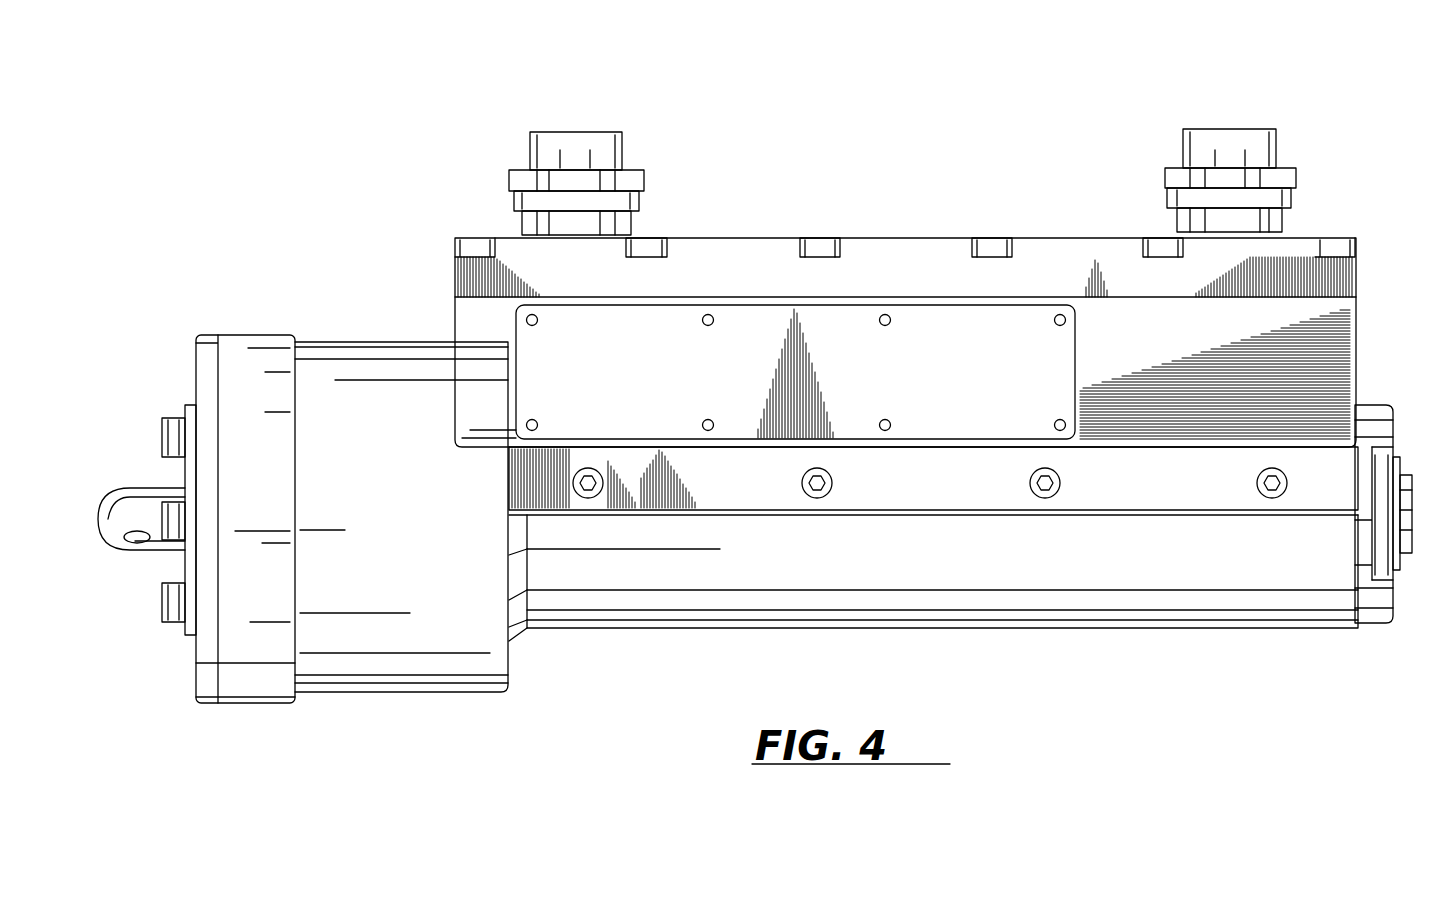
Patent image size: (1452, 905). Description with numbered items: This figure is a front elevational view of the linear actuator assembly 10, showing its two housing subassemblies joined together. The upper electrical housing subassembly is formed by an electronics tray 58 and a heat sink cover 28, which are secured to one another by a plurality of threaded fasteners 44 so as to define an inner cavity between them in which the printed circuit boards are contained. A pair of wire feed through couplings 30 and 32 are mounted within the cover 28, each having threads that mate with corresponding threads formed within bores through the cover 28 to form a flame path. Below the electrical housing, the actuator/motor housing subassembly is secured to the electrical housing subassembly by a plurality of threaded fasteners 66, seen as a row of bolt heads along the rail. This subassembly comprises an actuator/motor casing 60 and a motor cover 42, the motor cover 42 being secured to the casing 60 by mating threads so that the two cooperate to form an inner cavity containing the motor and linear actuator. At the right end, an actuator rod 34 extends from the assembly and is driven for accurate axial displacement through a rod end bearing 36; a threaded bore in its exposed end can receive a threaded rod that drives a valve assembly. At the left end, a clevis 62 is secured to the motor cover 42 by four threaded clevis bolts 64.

The linear actuator assembly 10 is at (1000, 90).
The heat sink cover 28 is at (940, 281).
The wire feed through coupling 30 is at (580, 132).
The wire feed through coupling 32 is at (1230, 128).
The actuator rod 34 is at (1412, 530).
The rod end bearing 36 is at (1396, 462).
The motor cover 42 is at (205, 333).
The threaded fasteners 44 is at (820, 238).
The electronics tray 58 is at (1148, 345).
The actuator/motor casing 60 is at (436, 535).
The clevis 62 is at (126, 552).
The threaded clevis bolts 64 is at (160, 437).
The threaded fasteners 66 is at (590, 498).